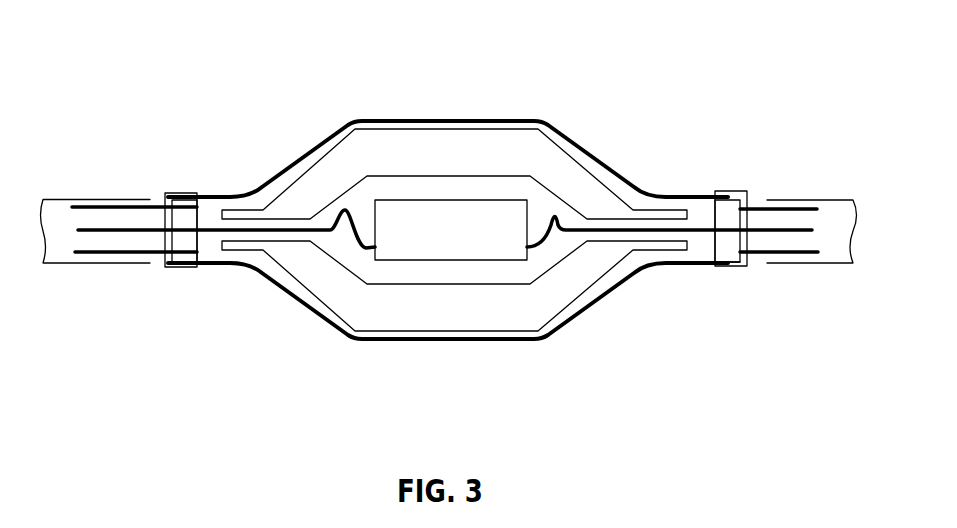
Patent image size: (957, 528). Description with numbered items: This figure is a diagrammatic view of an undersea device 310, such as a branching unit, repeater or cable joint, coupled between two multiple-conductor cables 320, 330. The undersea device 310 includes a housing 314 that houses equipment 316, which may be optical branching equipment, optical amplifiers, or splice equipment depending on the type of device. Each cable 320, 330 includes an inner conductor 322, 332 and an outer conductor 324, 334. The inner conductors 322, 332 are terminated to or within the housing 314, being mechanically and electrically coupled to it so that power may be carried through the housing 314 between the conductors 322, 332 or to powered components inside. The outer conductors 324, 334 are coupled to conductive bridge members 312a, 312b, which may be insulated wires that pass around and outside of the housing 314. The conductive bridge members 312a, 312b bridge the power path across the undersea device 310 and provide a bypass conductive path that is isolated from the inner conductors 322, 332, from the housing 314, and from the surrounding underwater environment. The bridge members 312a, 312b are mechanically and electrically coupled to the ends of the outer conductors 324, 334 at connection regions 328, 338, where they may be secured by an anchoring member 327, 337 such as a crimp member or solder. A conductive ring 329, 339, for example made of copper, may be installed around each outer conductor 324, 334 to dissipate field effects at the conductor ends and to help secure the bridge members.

The undersea device 310 is at (245, 92).
The conductive bridge member 312a is at (367, 118).
The conductive bridge member 312b is at (307, 313).
The housing 314 is at (512, 150).
The equipment 316 is at (443, 199).
The cable 320 is at (62, 200).
The inner conductor 322 is at (100, 237).
The outer conductor 324 is at (112, 207).
The anchoring member 327 is at (195, 192).
The connection region 328 is at (175, 178).
The conductive ring 329 is at (173, 267).
The cable 330 is at (828, 198).
The inner conductor 332 is at (780, 262).
The outer conductor 334 is at (777, 203).
The anchoring member 337 is at (713, 192).
The connection region 338 is at (738, 179).
The conductive ring 339 is at (733, 267).